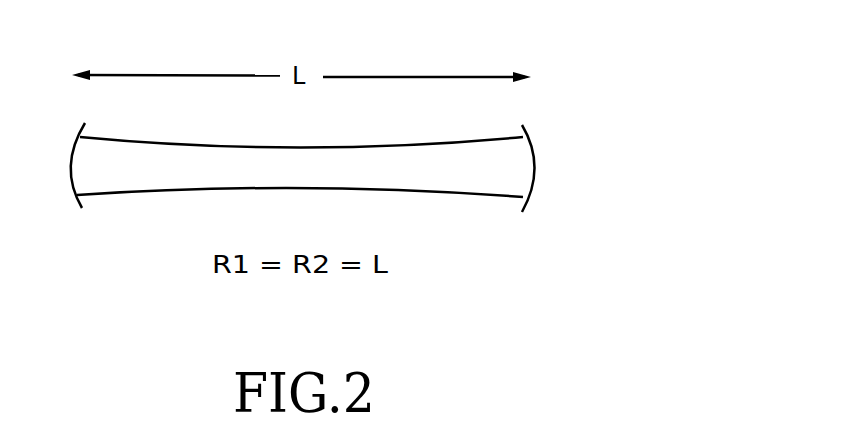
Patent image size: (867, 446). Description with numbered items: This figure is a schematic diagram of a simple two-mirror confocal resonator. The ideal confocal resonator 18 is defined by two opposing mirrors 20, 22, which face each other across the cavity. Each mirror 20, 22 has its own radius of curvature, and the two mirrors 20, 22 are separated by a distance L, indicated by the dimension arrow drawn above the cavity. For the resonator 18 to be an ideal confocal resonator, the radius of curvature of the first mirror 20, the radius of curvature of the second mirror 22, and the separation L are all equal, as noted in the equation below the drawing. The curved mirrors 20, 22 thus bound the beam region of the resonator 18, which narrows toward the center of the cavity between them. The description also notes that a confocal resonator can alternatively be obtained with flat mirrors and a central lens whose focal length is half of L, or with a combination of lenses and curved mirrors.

The ideal confocal resonator 18 is at (387, 195).
The mirror 20 is at (83, 185).
The mirror 22 is at (526, 189).